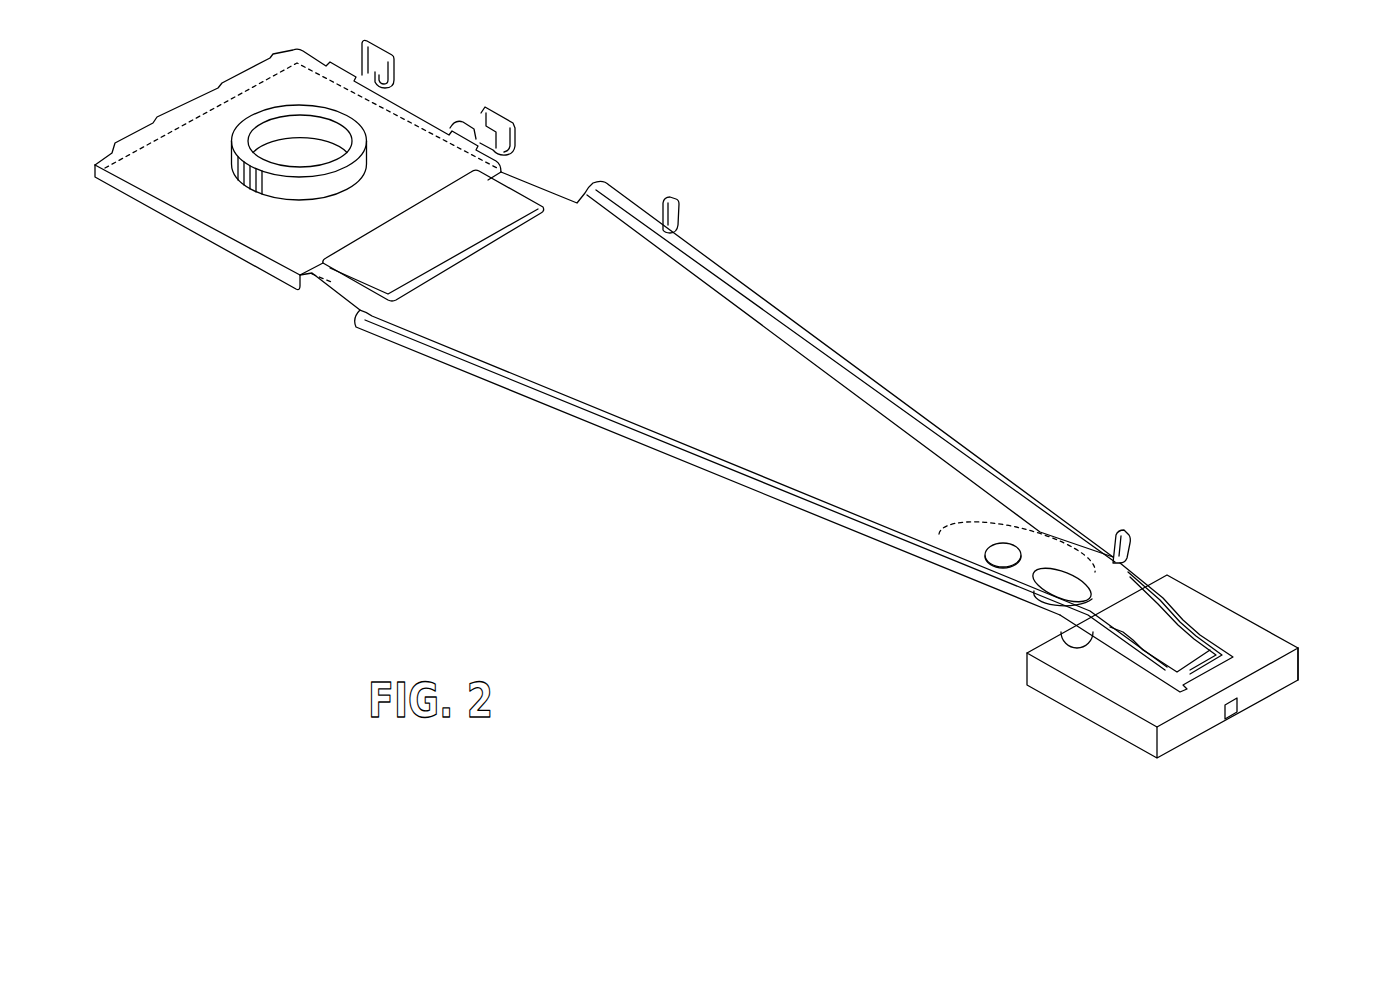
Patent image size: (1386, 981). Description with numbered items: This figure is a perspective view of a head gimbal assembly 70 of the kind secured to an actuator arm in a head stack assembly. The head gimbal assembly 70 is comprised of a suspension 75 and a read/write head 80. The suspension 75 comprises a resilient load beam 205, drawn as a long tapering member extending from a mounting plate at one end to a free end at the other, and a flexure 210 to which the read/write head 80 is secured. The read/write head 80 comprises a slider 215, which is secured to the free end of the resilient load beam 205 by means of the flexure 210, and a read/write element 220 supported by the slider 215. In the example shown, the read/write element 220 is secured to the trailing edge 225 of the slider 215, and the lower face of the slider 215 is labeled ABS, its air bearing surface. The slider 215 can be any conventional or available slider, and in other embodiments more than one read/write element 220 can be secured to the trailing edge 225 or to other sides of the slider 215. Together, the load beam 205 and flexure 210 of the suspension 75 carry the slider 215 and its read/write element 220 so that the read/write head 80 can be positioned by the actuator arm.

The head gimbal assembly 70 is at (815, 180).
The resilient load beam 205 is at (800, 397).
The suspension 75 is at (1005, 458).
The read/write head 80 is at (1189, 571).
The flexure 210 is at (1070, 632).
The slider 215 is at (1225, 605).
The read/write element 220 is at (1232, 714).
The trailing edge 225 is at (1300, 678).
The air bearing surface ABS is at (1184, 745).